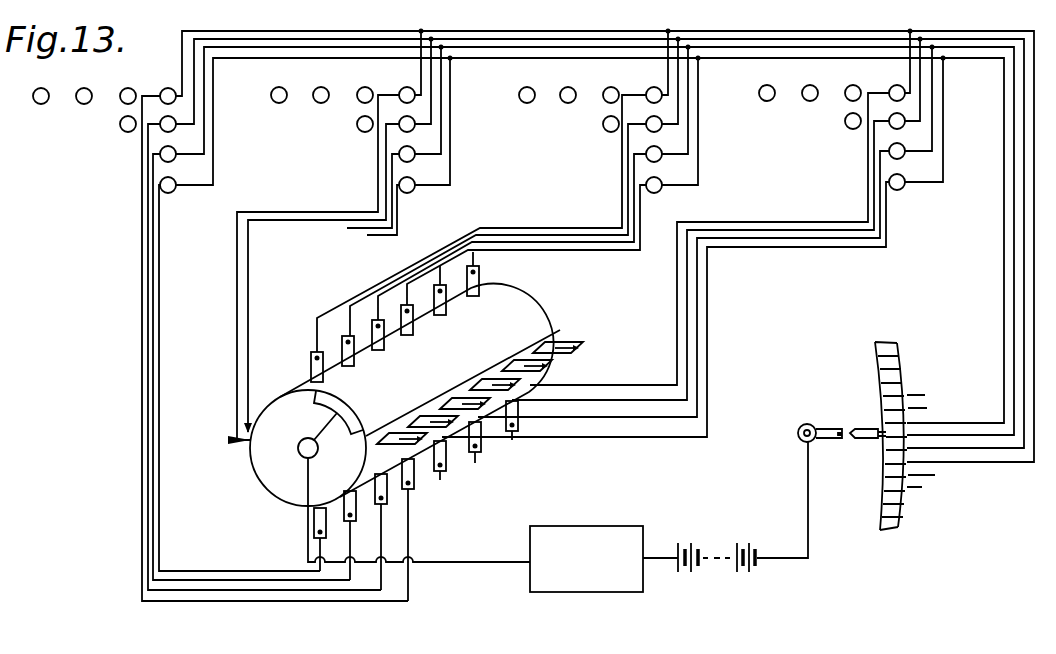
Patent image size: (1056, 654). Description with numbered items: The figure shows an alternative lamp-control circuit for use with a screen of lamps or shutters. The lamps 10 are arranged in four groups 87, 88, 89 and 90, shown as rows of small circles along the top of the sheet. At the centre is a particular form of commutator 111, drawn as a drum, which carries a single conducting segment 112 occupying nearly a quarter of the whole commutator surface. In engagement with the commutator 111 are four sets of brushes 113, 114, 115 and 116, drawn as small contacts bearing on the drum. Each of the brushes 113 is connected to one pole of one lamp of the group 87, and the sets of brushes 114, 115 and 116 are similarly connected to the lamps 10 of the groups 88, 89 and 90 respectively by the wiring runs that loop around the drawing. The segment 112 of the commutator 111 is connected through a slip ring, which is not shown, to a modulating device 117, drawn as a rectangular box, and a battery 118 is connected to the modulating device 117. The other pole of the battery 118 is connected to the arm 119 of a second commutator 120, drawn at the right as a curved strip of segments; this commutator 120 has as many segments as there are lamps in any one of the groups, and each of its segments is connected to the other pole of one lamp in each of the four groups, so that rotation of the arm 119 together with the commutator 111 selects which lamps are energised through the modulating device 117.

The lamps 10 is at (126, 91).
The group of lamps 87 is at (552, 316).
The group of lamps 88 is at (345, 235).
The group of lamps 89 is at (509, 191).
The group of lamps 90 is at (694, 233).
The commutator 111 is at (552, 356).
The conducting segment 112 is at (503, 303).
The set of brushes 113 is at (388, 497).
The set of brushes 114 is at (229, 440).
The set of brushes 115 is at (318, 356).
The set of brushes 116 is at (513, 443).
The modulating device 117 is at (573, 543).
The battery 118 is at (710, 552).
The arm 119 is at (858, 441).
The commutator 120 is at (888, 342).